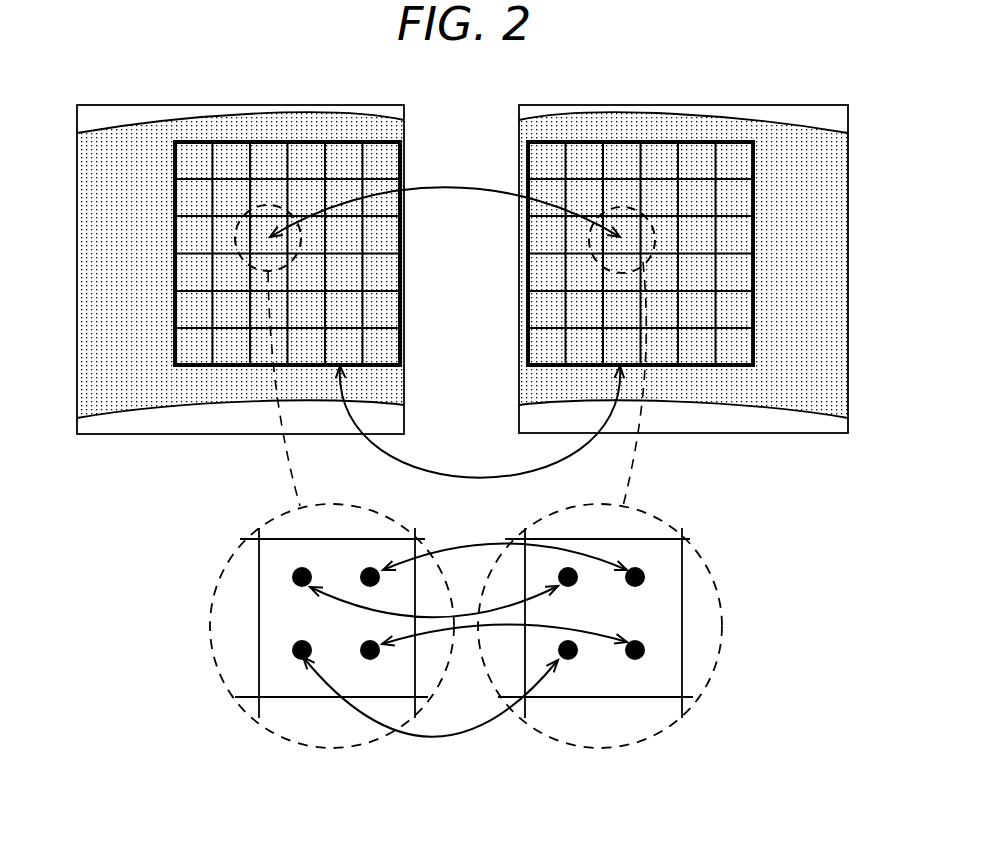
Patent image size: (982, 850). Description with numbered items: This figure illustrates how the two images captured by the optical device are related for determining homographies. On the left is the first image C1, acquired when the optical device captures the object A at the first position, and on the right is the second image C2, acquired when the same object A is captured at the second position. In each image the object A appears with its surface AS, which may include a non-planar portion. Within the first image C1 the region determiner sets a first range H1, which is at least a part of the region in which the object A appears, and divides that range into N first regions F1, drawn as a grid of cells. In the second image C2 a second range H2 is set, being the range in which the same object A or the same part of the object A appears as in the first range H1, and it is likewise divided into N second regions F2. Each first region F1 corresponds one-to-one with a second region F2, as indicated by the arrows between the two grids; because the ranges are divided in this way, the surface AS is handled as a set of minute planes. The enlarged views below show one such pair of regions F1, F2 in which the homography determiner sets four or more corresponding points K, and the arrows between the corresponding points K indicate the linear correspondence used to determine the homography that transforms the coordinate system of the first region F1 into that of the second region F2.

The first image C1 is at (110, 105).
The second image C2 is at (552, 105).
The object A is at (97, 128).
The surface of the object AS is at (77, 200).
The first range H1 is at (233, 142).
The second range H2 is at (625, 142).
The first region F1 is at (298, 160).
The second region F2 is at (665, 160).
The corresponding points K is at (376, 570).